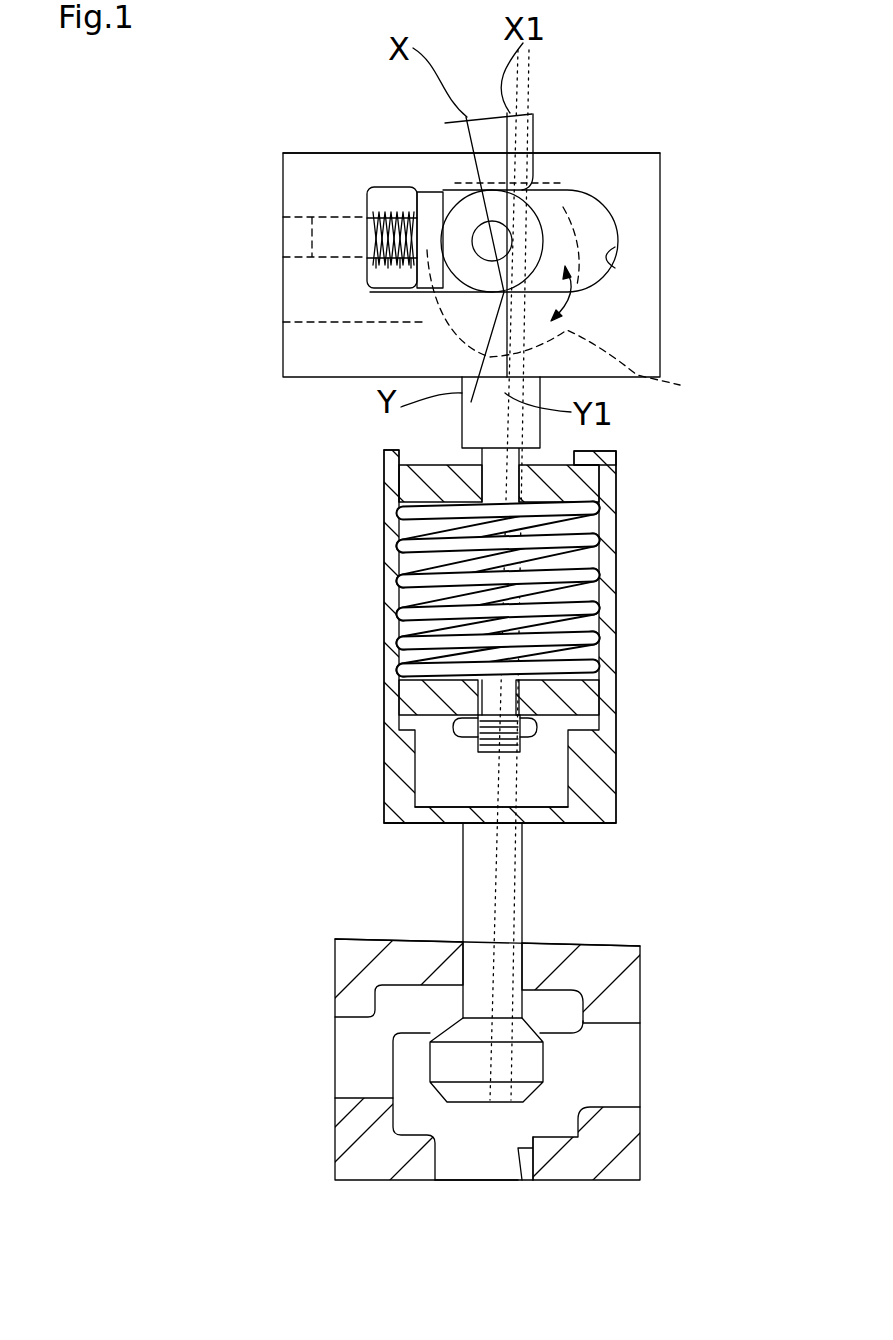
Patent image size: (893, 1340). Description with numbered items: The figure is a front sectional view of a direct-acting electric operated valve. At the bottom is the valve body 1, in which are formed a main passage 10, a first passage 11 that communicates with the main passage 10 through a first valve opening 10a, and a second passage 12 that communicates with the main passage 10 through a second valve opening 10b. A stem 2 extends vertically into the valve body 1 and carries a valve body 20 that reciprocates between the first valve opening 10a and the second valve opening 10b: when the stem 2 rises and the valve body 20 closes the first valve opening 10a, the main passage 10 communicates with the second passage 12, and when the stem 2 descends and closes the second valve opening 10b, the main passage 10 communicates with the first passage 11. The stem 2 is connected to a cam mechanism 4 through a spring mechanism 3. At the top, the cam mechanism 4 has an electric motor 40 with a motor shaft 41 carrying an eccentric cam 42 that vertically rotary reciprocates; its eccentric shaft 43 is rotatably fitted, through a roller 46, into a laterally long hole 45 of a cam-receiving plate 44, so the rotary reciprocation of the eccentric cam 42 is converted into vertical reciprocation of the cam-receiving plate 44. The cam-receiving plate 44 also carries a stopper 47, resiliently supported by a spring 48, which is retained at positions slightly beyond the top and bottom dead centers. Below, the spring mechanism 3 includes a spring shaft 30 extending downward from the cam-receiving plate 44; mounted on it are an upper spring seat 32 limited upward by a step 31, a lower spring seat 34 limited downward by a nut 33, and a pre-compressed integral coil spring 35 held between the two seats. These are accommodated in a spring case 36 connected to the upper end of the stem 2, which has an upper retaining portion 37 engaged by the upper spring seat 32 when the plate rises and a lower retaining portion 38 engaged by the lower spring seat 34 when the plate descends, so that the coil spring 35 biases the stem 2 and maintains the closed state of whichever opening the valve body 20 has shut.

The valve body 1 is at (330, 970).
The stem 2 is at (458, 908).
The spring mechanism 3 is at (622, 570).
The cam mechanism 4 is at (664, 244).
The main passage 10 is at (633, 1048).
The first valve opening 10a is at (522, 1020).
The second valve opening 10b is at (520, 1150).
The first passage 11 is at (350, 1043).
The second passage 12 is at (463, 1177).
The valve body 20 is at (447, 1066).
The spring shaft 30 is at (545, 448).
The step 31 is at (462, 448).
The upper spring seat 32 is at (399, 482).
The nut 33 is at (537, 730).
The lower spring seat 34 is at (405, 705).
The coil spring 35 is at (417, 552).
The spring case 36 is at (385, 612).
The upper retaining portion 37 is at (580, 470).
The lower retaining portion 38 is at (392, 718).
The electric motor 40 is at (578, 306).
The motor shaft 41 is at (283, 322).
The eccentric cam 42 is at (528, 196).
The eccentric shaft 43 is at (480, 241).
The cam-receiving plate 44 is at (328, 157).
The laterally long hole 45 is at (610, 267).
The roller 46 is at (534, 178).
The stopper 47 is at (425, 263).
The spring 48 is at (367, 223).